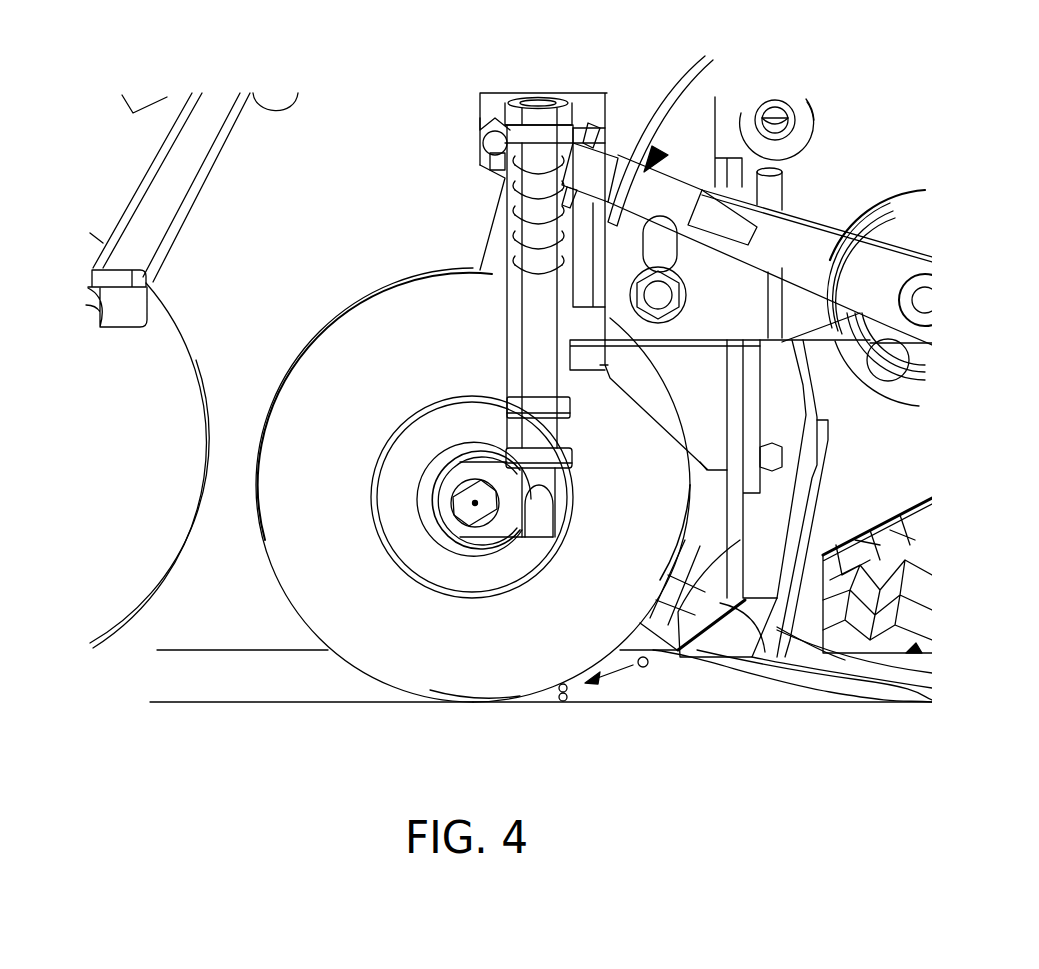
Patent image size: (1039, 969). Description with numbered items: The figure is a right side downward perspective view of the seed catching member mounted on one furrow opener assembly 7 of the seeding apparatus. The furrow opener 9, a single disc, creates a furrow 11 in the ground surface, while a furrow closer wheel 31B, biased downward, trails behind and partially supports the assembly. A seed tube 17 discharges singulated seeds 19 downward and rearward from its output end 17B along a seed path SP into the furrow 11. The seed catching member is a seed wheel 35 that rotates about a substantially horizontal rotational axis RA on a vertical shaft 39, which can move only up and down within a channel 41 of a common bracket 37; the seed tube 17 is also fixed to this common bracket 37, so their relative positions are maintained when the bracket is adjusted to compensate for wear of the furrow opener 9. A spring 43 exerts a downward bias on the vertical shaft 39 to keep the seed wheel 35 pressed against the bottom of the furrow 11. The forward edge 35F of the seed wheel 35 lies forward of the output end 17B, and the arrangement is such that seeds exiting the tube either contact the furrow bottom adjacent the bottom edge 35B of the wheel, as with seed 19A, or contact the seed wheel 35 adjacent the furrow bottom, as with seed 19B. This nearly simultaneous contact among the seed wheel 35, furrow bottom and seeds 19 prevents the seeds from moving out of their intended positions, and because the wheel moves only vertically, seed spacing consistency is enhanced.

The furrow opener assembly 7 is at (700, 97).
The furrow opener 9 is at (898, 683).
The furrow 11 is at (215, 680).
The seed tube 17 is at (767, 647).
The output end of the seed tube 17B is at (723, 663).
The seeds 19 is at (648, 665).
The seed contacting the furrow bottom 19A is at (562, 703).
The seed contacting the seed wheel 19B is at (566, 693).
The seed path SP is at (620, 677).
The rotational axis RA is at (475, 503).
The furrow closer wheel 31B is at (122, 636).
The seed wheel 35 is at (362, 302).
The bottom edge of the seed wheel 35B is at (477, 705).
The forward edge of the seed wheel 35F is at (700, 537).
The common bracket 37 is at (660, 427).
The vertical shaft 39 is at (517, 430).
The channel 41 is at (513, 316).
The spring 43 is at (530, 200).